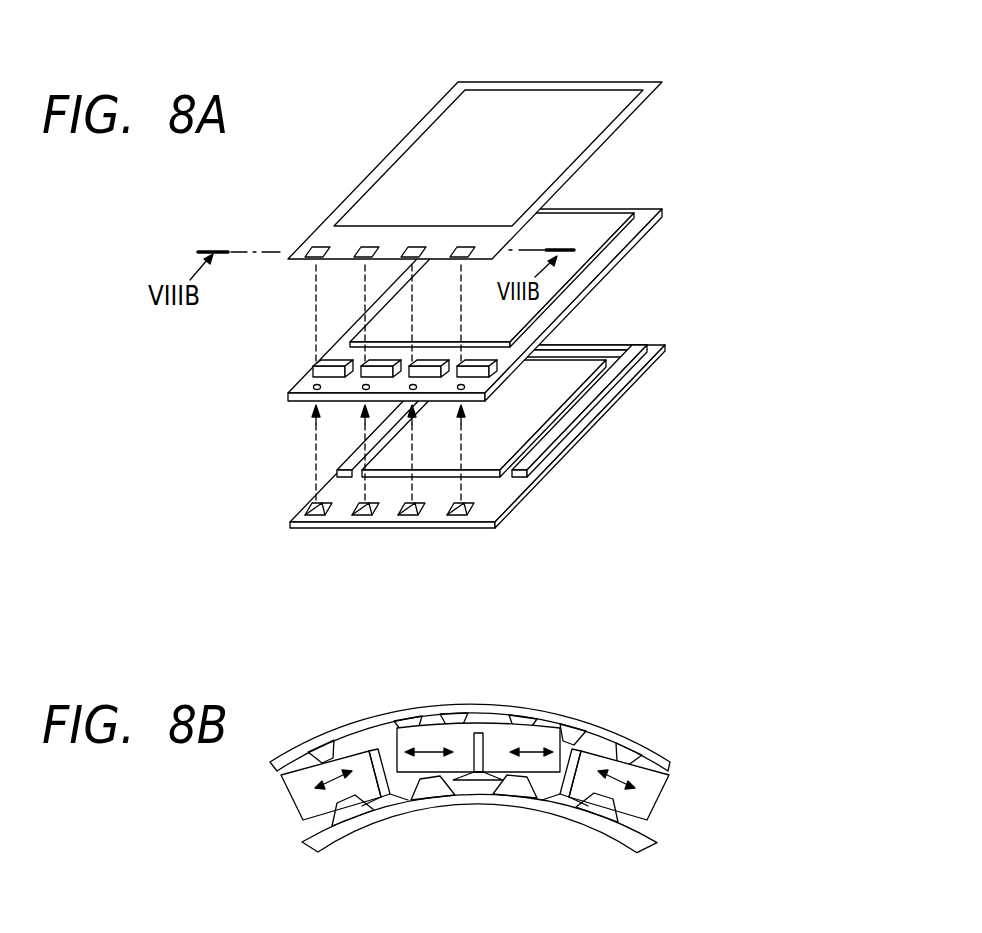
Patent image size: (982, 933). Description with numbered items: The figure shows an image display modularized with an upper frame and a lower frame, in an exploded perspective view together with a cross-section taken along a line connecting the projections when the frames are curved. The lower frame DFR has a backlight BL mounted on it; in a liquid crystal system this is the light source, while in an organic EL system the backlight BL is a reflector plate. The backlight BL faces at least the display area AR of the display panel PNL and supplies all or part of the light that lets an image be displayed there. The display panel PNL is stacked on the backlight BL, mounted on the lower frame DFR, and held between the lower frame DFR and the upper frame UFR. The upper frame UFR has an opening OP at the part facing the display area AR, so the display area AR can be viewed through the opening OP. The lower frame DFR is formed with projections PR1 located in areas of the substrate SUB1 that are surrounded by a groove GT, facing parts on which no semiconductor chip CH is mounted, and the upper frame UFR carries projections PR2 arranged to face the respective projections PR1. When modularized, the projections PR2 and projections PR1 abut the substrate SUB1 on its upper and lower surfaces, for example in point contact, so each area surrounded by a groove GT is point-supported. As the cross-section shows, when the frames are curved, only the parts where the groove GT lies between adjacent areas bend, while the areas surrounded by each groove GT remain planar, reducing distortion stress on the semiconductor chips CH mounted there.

In FIG. 8A, the upper frame UFR is at (475, 136).
In FIG. 8B, the upper frame UFR is at (650, 743).
In FIG. 8A, the opening OP is at (419, 144).
In FIG. 8A, the projections PR2 is at (312, 247).
In FIG. 8B, the projections PR2 is at (320, 748).
In FIG. 8A, the substrate SUB1 is at (625, 205).
In FIG. 8B, the substrate SUB1 is at (652, 793).
In FIG. 8A, the display panel PNL is at (501, 283).
In FIG. 8A, the display area AR is at (492, 280).
In FIG. 8A, the semiconductor chip CH is at (483, 372).
In FIG. 8A, the groove GT is at (308, 398).
In FIG. 8B, the groove GT is at (605, 773).
In FIG. 8A, the backlight BL is at (525, 430).
In FIG. 8A, the lower frame DFR is at (523, 492).
In FIG. 8B, the lower frame DFR is at (345, 835).
In FIG. 8A, the projections PR1 is at (305, 508).
In FIG. 8B, the projections PR1 is at (437, 782).